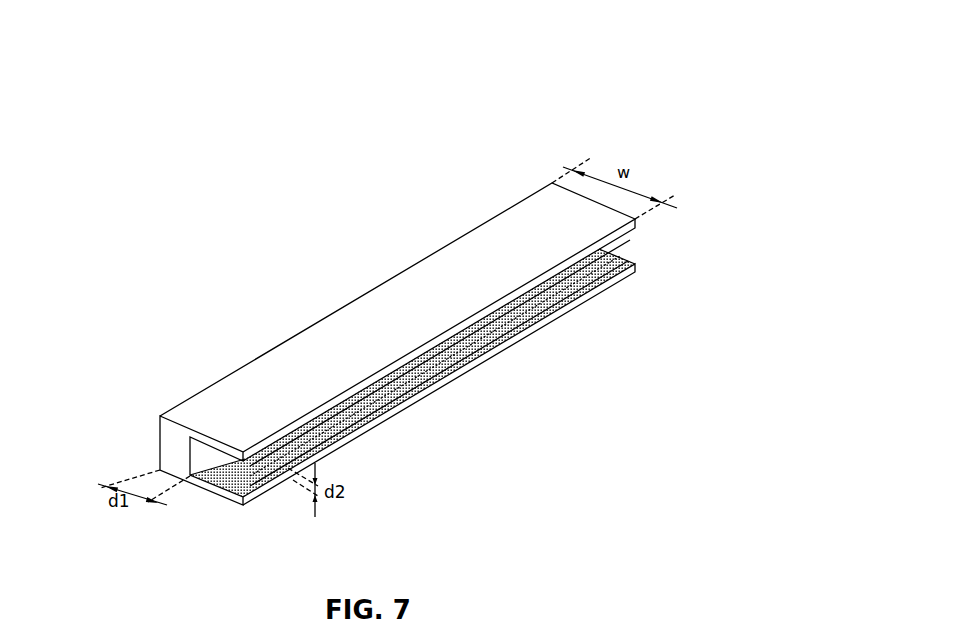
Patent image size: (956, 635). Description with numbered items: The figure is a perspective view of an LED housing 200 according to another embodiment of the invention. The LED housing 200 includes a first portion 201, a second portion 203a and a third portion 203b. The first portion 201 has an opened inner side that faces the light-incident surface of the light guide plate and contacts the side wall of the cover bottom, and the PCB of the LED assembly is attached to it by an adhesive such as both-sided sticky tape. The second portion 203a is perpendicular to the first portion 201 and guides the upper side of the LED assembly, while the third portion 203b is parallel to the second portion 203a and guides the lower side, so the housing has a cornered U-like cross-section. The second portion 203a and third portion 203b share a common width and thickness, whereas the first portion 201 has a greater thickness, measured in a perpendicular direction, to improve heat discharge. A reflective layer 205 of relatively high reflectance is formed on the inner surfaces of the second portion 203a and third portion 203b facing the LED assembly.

The LED housing 200 is at (347, 295).
The first portion 201 is at (157, 437).
The second portion 203a is at (228, 418).
The third portion 203b is at (222, 495).
The reflective layer 205 is at (407, 366).